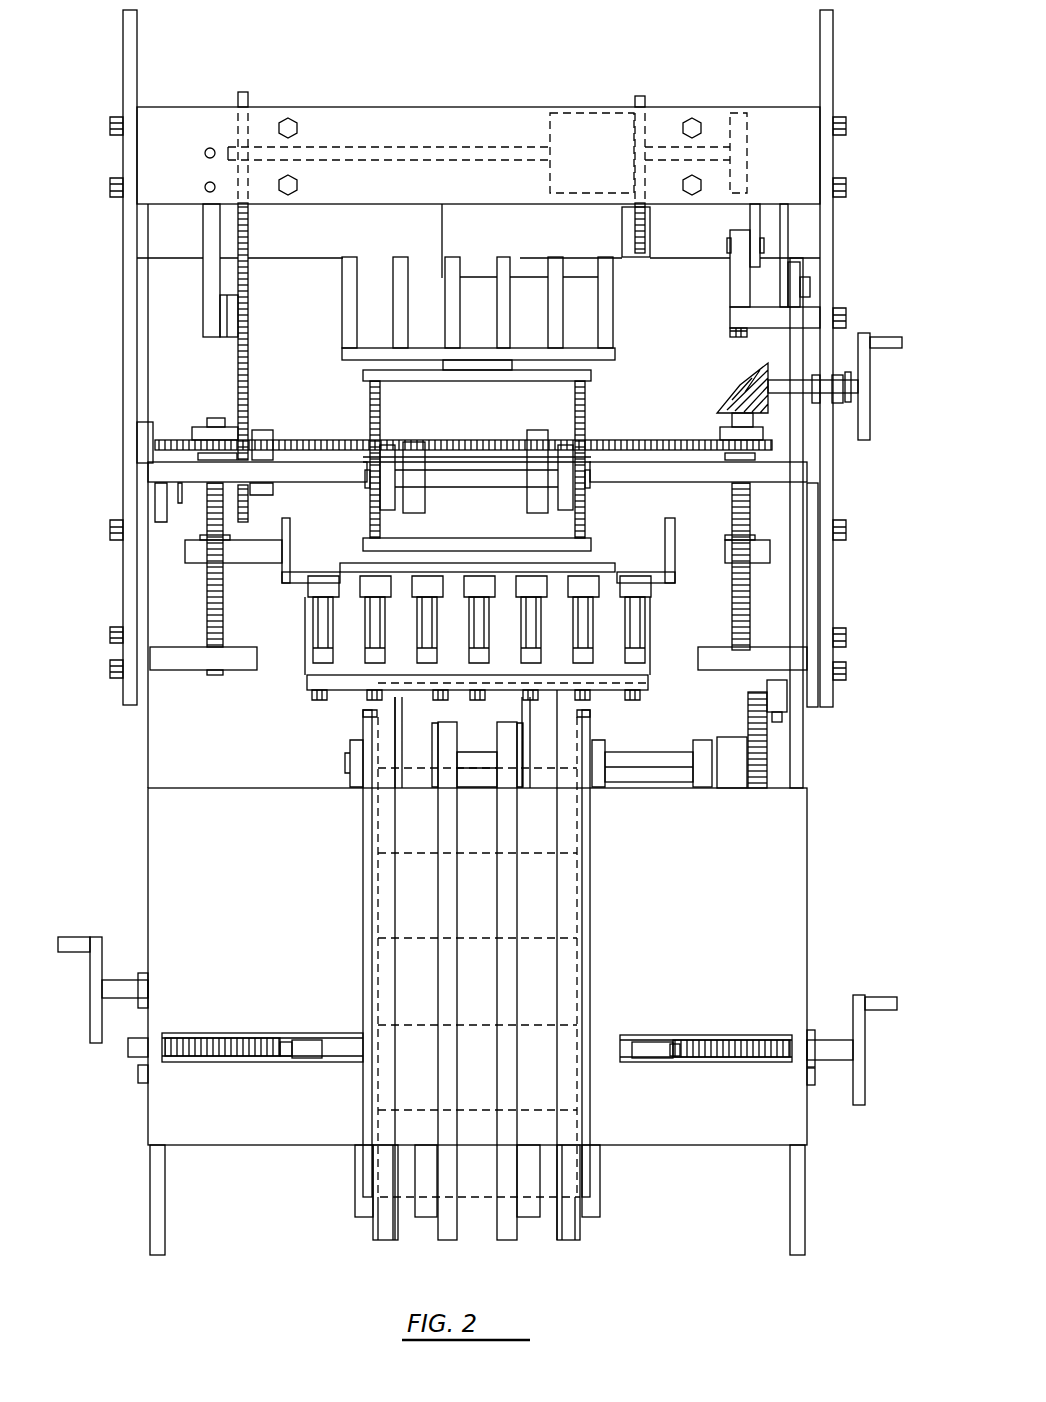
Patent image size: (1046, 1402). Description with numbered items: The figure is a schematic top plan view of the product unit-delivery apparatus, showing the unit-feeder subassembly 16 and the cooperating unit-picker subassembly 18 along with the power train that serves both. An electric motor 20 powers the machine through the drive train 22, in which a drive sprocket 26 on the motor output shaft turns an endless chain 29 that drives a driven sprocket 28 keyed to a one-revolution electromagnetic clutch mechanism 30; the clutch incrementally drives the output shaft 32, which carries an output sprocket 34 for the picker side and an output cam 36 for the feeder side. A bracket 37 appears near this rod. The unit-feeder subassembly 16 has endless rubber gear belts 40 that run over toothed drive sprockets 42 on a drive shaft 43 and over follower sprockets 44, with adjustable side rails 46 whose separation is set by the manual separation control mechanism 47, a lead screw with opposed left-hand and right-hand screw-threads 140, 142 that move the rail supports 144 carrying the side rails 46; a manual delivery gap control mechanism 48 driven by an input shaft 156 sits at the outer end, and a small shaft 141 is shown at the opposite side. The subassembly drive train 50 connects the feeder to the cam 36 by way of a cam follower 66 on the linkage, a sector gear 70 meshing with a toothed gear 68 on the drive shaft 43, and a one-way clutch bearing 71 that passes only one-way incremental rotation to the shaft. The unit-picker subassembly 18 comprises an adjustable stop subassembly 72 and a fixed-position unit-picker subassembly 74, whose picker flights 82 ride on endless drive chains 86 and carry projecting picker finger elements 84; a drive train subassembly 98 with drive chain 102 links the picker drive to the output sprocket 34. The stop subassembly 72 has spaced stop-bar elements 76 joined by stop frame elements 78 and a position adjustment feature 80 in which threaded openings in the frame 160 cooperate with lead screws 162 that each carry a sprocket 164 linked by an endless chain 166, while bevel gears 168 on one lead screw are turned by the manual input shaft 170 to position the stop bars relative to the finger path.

The unit-feeder subassembly 16 is at (336, 1174).
The unit-picker subassembly 18 is at (300, 704).
The electric motor 20 is at (470, 232).
The drive train 22 is at (578, 98).
The drive sprocket 26 is at (627, 213).
The driven sprocket 28 is at (646, 128).
The endless chain 29 is at (640, 221).
The electromagnetic clutch mechanism 30 is at (586, 116).
The output shaft 32 is at (438, 147).
The output sprocket 34 is at (250, 128).
The output cam 36 is at (742, 118).
The bracket 37 is at (228, 338).
The endless rubber gear belts 40 is at (570, 1240).
The toothed drive sprockets 42 is at (562, 713).
The drive shaft 43 is at (650, 752).
The follower sprockets 44 is at (583, 1227).
The adjustable side rails 46 is at (372, 983).
The manual separation control mechanism 47 is at (867, 1080).
The manual delivery gap control mechanism 48 is at (88, 1011).
The subassembly drive train 50 is at (770, 735).
The cam follower 66 is at (728, 215).
The toothed gear 68 is at (758, 782).
The sector gear 70 is at (762, 722).
The one-way clutch bearing 71 is at (735, 740).
The adjustable stop subassembly 72 is at (680, 593).
The unit-picker subassembly 74 is at (368, 500).
The stop-bar elements 76 is at (640, 585).
The stop frame elements 78 is at (620, 678).
The position adjustment feature 80 is at (872, 392).
The product picker flights 82 is at (437, 543).
The picker finger elements 84 is at (608, 587).
The endless drive chains 86 is at (584, 418).
The drive train subassembly 98 is at (252, 392).
The drive chain 102 is at (249, 362).
The left-hand screw-threads 140 is at (732, 1058).
The shaft 141 is at (835, 1045).
The right-hand screw-threads 142 is at (233, 1057).
The rail supports 144 is at (650, 1048).
The input shaft 156 is at (125, 985).
The frame 160 is at (770, 552).
The lead screws 162 is at (752, 604).
The sprocket 164 is at (755, 432).
The endless chain 166 is at (458, 440).
The bevel gears 168 is at (740, 393).
The input shaft 170 is at (849, 383).